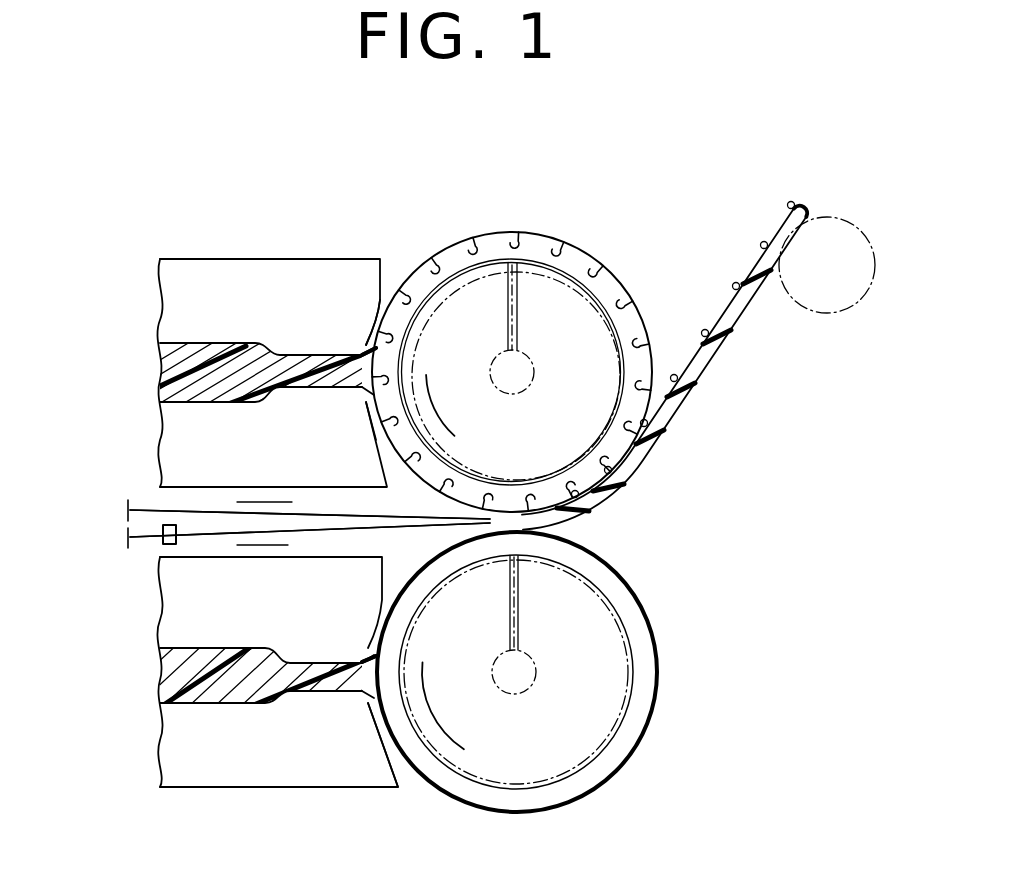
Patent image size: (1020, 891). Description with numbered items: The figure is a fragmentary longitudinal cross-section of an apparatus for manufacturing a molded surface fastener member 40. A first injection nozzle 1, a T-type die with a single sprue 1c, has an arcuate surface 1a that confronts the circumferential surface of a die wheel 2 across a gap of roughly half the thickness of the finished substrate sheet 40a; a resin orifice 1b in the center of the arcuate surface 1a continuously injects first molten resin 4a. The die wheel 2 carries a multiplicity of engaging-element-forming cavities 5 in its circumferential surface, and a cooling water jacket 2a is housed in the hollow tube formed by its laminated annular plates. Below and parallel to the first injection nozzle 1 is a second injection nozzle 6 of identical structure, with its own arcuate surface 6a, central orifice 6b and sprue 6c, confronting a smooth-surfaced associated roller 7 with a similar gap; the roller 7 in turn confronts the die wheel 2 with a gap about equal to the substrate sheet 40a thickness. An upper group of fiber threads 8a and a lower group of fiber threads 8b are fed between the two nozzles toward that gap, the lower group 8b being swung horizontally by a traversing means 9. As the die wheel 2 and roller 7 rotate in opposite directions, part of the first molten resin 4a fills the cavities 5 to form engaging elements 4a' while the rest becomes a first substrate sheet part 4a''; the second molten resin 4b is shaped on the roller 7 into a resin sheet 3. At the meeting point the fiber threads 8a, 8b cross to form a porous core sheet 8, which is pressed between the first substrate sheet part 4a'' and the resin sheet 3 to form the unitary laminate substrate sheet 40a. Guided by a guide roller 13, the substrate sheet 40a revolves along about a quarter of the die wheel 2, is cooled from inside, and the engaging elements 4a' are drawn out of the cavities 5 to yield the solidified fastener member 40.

The first injection nozzle 1 is at (305, 297).
The arcuate surface 1a is at (383, 302).
The resin orifice 1b is at (346, 378).
The sprue 1c is at (313, 380).
The die wheel 2 is at (583, 283).
The cooling water jacket 2a is at (617, 276).
The resin sheet 3 is at (432, 553).
The first molten resin 4a is at (281, 302).
The engaging elements 4a' is at (683, 335).
The first substrate sheet part 4a'' is at (514, 371).
The second molten resin 4b is at (217, 695).
The engaging-element-forming cavities 5 is at (562, 234).
The second injection nozzle 6 is at (298, 763).
The arcuate surface 6a is at (397, 763).
The orifice 6b is at (347, 692).
The sprue 6c is at (317, 683).
The associated roller 7 is at (640, 683).
The porous core sheet 8 is at (72, 462).
The upper group of fiber threads 8a is at (128, 500).
The lower group of fiber threads 8b is at (128, 546).
The traversing means 9 is at (163, 543).
The guide roller 13 is at (848, 243).
The molded surface fastener member 40 is at (716, 360).
The substrate sheet 40a is at (695, 380).